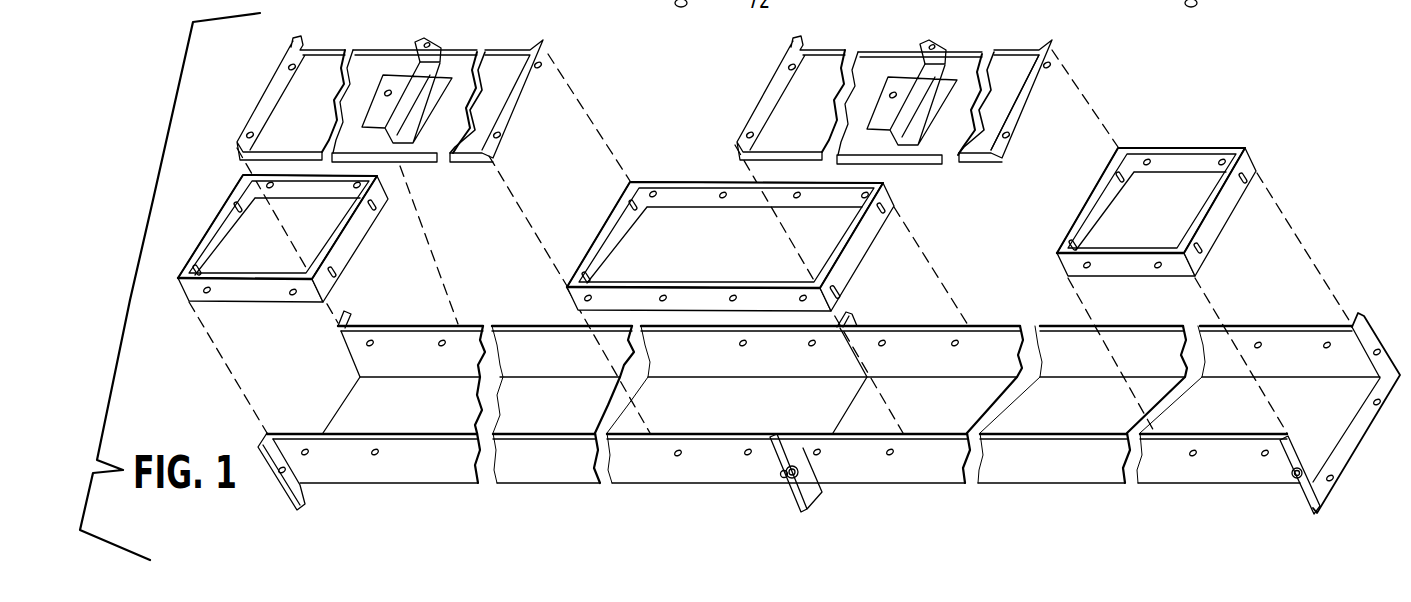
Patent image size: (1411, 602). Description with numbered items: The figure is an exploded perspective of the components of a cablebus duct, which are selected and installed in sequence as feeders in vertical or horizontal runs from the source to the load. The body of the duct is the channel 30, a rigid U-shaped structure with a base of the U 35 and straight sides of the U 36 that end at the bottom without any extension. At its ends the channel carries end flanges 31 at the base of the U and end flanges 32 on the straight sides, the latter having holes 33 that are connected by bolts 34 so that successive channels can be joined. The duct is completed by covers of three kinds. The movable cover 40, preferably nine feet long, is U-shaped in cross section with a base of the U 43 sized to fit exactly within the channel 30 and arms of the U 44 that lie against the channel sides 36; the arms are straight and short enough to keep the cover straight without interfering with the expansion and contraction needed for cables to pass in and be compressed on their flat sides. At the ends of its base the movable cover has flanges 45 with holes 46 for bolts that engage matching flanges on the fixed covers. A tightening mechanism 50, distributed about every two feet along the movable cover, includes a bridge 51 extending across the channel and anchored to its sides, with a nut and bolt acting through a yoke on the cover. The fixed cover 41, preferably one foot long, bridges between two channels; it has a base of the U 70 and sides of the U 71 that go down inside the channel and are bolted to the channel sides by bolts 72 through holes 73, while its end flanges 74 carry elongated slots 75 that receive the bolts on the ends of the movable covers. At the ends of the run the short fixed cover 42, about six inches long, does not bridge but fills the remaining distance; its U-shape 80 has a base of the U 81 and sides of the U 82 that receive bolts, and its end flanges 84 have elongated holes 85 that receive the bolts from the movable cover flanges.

The channel 30 is at (362, 455).
The end flanges at the base of the U 31 is at (1362, 423).
The end flanges on the straight sides of the U 32 is at (1308, 483).
The holes 33 is at (1297, 473).
The bolts 34 is at (788, 487).
The base of the U 35 is at (555, 412).
The sides of the U 36 is at (562, 462).
The movable cover 40 is at (422, 147).
The fixed cover 41 is at (702, 300).
The fixed cover 42 is at (267, 288).
The base of the U 43 is at (980, 125).
The arms of the U 44 is at (892, 57).
The flanges 45 is at (770, 103).
The holes 46 is at (500, 136).
The tightening mechanism 50 is at (420, 110).
The bridge 51 is at (427, 60).
The base of the U 70 is at (673, 251).
The sides of the U 71 is at (677, 300).
The bolts 72 is at (759, 7).
The holes 73 is at (732, 300).
The flanges 74 is at (857, 250).
The elongated slots 75 is at (837, 282).
The U-shape 80 is at (260, 245).
The base of the U 81 is at (236, 265).
The sides of the U 82 is at (310, 293).
The flanges 84 is at (355, 235).
The elongated holes 85 is at (337, 275).